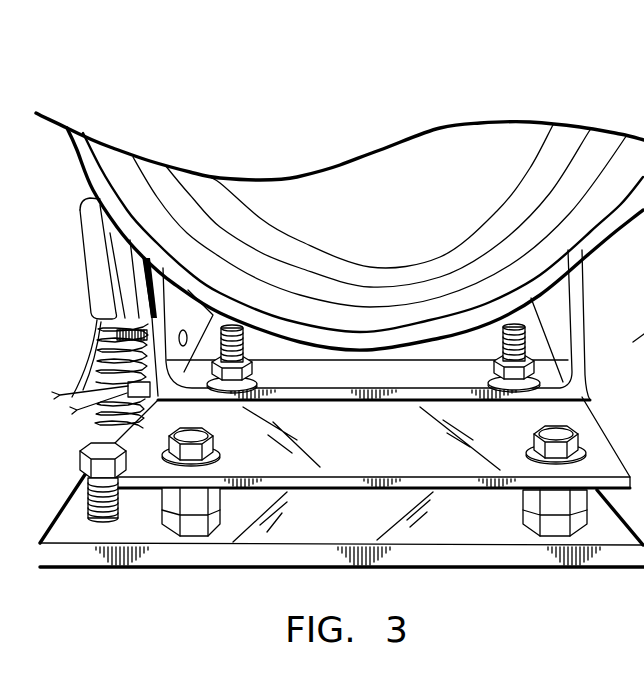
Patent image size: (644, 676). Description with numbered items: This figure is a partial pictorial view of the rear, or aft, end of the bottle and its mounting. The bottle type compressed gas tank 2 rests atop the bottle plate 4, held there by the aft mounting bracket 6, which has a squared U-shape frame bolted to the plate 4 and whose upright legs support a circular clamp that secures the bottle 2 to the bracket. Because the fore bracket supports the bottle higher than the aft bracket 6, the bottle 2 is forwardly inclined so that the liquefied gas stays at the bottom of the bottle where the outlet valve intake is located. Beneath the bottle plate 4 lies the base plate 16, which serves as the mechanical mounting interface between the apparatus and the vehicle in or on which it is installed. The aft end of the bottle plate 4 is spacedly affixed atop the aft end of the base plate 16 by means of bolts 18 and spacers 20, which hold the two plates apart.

The bottle type compressed gas tank 2 is at (381, 216).
The plate 4 is at (369, 455).
The aft mounting bracket 6 is at (600, 337).
The base plate 16 is at (173, 568).
The bolts 18 is at (557, 437).
The spacers 20 is at (578, 518).